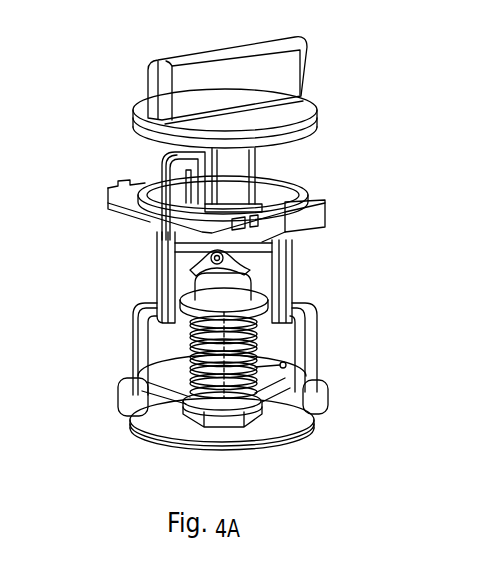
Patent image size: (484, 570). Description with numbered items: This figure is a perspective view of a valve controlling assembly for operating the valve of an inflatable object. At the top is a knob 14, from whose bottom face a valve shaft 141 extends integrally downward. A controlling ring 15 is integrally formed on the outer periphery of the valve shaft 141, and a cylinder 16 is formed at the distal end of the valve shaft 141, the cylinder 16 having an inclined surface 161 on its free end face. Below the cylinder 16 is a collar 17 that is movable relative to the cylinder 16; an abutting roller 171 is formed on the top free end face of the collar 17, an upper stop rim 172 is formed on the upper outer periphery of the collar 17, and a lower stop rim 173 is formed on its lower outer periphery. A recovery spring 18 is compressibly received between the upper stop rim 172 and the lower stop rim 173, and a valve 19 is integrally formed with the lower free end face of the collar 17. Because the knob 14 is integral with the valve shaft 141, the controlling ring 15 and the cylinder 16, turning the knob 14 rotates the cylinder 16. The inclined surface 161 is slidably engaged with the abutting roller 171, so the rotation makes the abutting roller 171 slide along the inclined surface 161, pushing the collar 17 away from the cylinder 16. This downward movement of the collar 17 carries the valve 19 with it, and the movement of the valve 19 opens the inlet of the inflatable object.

The knob 14 is at (285, 73).
The valve shaft 141 is at (227, 192).
The controlling ring 15 is at (308, 220).
The cylinder 16 is at (258, 249).
The inclined surface 161 is at (215, 262).
The collar 17 is at (118, 400).
The abutting roller 171 is at (207, 308).
The upper stop rim 172 is at (205, 316).
The lower stop rim 173 is at (215, 412).
The recovery spring 18 is at (286, 365).
The valve 19 is at (292, 427).